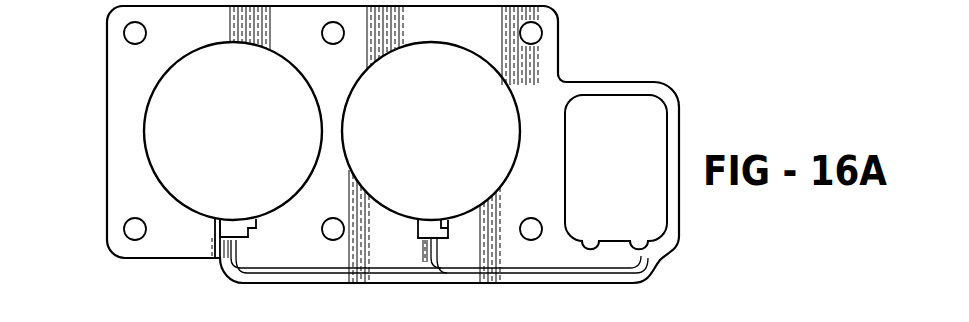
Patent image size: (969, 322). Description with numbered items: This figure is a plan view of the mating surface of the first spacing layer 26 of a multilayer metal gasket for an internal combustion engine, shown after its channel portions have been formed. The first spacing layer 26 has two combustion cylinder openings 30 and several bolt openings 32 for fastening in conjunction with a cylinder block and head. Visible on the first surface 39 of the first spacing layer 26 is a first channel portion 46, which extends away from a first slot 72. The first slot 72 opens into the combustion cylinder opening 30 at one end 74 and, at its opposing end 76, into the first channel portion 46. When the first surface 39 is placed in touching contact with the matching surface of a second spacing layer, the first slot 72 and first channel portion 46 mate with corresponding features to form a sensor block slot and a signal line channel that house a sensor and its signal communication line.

The first spacing layer 26 is at (654, 80).
The combustion cylinder opening 30 is at (160, 126).
The bolt opening 32 is at (130, 33).
The first surface 39 is at (548, 90).
The first channel portion 46 is at (298, 270).
The first slot 72 is at (247, 228).
The one end 74 is at (247, 221).
The opposing end 76 is at (221, 258).